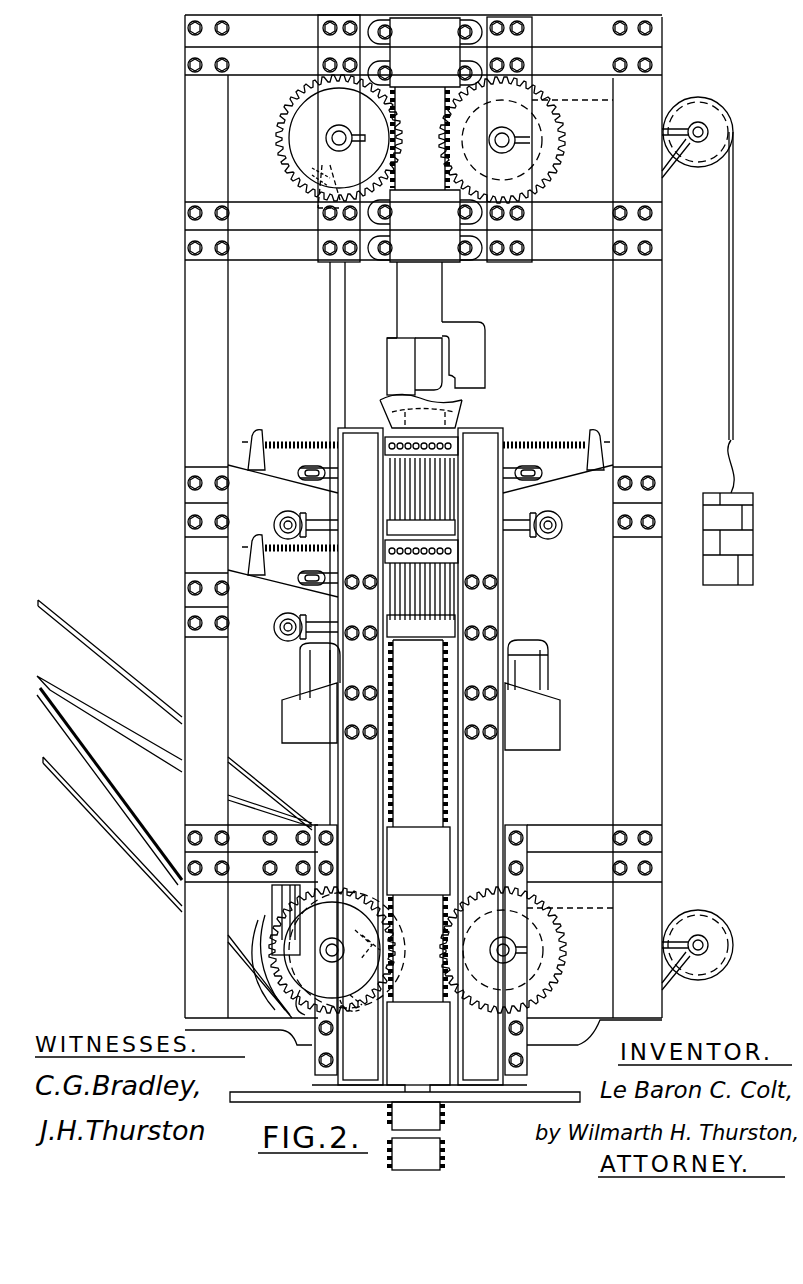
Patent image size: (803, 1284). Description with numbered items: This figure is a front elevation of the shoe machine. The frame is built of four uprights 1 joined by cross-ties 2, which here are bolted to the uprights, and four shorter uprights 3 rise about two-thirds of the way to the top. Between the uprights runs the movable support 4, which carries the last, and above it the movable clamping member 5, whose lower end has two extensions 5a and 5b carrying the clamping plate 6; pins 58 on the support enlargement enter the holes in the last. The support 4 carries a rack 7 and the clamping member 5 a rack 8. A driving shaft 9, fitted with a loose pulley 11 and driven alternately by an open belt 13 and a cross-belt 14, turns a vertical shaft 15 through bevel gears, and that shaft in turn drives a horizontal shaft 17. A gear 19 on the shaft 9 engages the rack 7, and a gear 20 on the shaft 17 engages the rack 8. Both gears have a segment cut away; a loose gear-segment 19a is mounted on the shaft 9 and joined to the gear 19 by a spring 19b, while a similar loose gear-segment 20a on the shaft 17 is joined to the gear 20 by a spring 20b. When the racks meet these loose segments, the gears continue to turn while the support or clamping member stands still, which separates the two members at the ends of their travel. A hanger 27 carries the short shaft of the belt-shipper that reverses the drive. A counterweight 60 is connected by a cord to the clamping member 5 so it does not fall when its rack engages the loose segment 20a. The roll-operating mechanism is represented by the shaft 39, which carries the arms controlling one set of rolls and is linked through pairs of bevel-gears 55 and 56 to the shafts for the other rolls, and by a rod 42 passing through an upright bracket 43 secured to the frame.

The upright 1 is at (215, 385).
The cross-tie 2 is at (568, 65).
The upright 3 is at (495, 608).
The movable support 4 is at (428, 815).
The movable clamping member 5 is at (412, 172).
The extension 5a is at (395, 368).
The extension 5b is at (487, 364).
The clamping plate 6 is at (440, 395).
The rack 7 is at (390, 790).
The rack 8 is at (400, 108).
The driving shaft 9 is at (332, 962).
The loose pulley 11 is at (285, 998).
The open belt 13 is at (100, 825).
The cross-belt 14 is at (108, 705).
The vertical shaft 15 is at (338, 388).
The horizontal shaft 17 is at (352, 140).
The gear 19 is at (390, 942).
The gear-segment 19a is at (357, 1010).
The spring 19b is at (375, 935).
The gear 20 is at (310, 112).
The gear-segment 20a is at (318, 210).
The spring 20b is at (312, 170).
The hanger 27 is at (275, 902).
The shaft 39 is at (322, 520).
The rod 42 is at (548, 660).
The upright bracket 43 is at (590, 445).
The bevel-gears 55 is at (562, 520).
The bevel-gears 56 is at (283, 520).
The pin 58 is at (460, 415).
The counterweight 60 is at (738, 540).